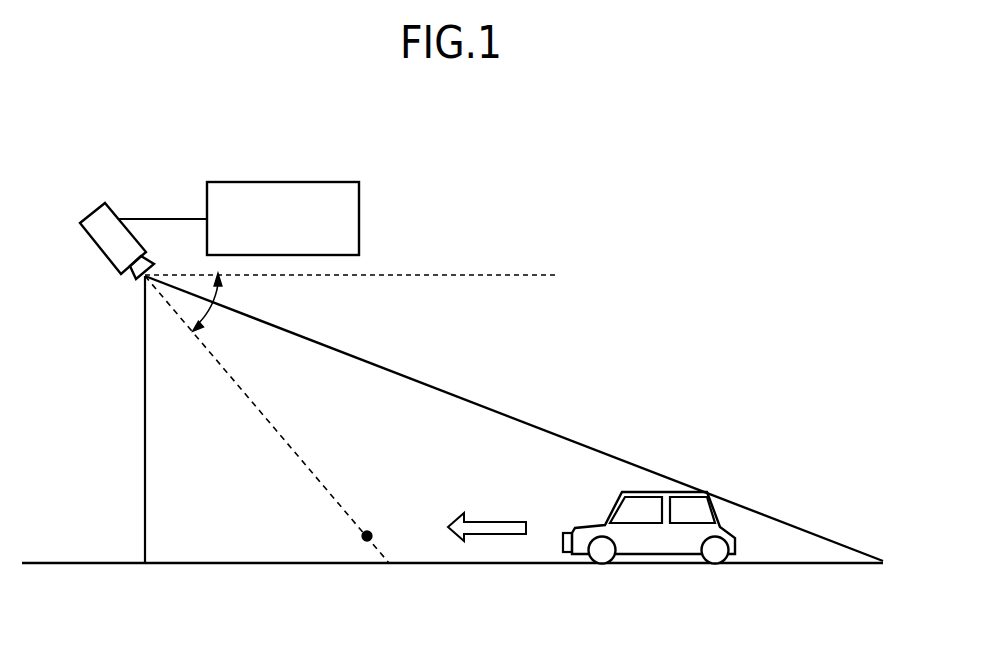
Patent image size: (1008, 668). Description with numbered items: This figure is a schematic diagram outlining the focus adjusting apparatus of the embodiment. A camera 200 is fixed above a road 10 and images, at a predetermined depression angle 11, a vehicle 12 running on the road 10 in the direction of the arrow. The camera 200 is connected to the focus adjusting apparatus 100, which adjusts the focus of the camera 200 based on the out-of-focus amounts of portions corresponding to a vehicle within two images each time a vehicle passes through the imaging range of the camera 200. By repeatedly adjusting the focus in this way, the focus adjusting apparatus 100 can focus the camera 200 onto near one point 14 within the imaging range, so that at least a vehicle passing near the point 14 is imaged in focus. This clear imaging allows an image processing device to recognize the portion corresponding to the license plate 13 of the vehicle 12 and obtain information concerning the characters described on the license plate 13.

The road 10 is at (88, 563).
The depression angle 11 is at (218, 292).
The vehicle 12 is at (663, 490).
The license plate 13 is at (568, 553).
The point 14 is at (372, 532).
The focus adjusting apparatus 100 is at (306, 182).
The camera 200 is at (107, 200).